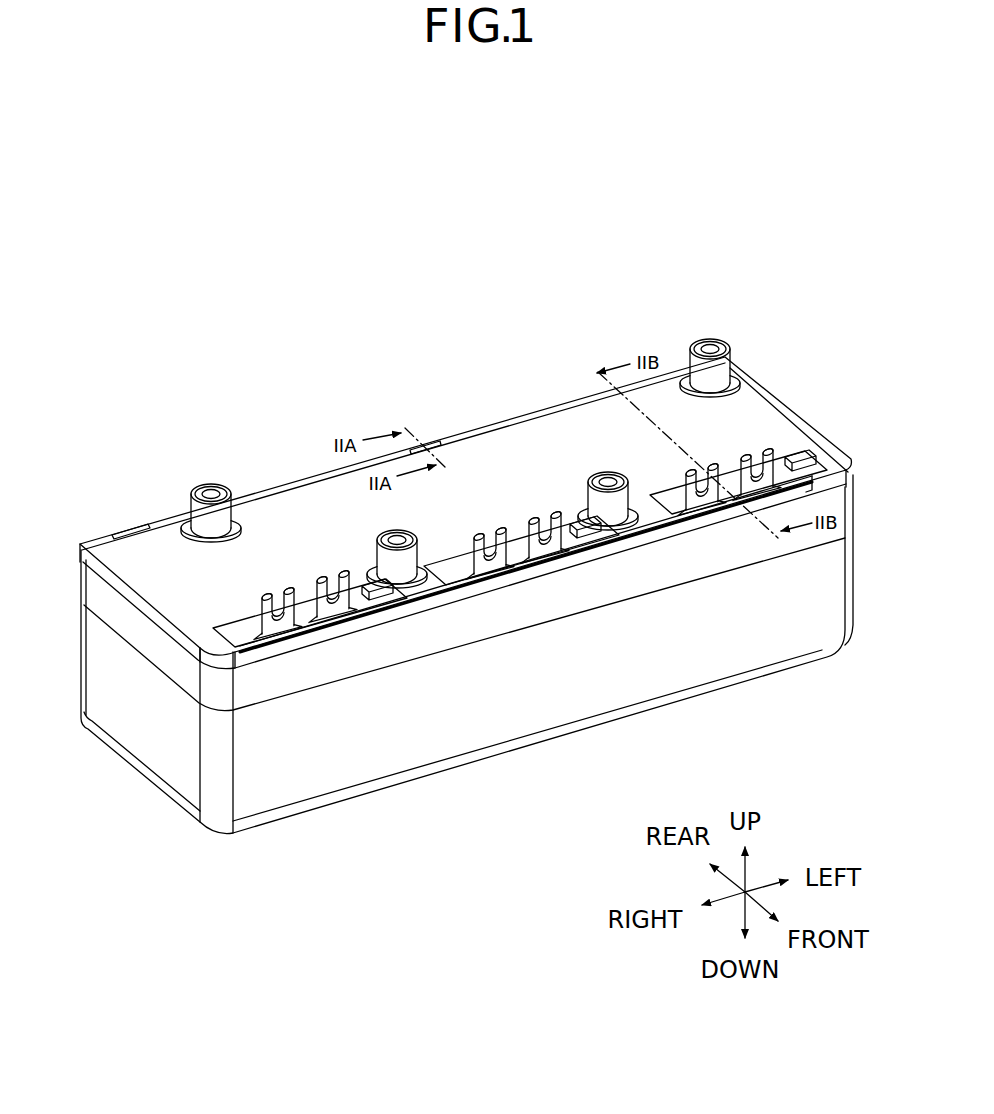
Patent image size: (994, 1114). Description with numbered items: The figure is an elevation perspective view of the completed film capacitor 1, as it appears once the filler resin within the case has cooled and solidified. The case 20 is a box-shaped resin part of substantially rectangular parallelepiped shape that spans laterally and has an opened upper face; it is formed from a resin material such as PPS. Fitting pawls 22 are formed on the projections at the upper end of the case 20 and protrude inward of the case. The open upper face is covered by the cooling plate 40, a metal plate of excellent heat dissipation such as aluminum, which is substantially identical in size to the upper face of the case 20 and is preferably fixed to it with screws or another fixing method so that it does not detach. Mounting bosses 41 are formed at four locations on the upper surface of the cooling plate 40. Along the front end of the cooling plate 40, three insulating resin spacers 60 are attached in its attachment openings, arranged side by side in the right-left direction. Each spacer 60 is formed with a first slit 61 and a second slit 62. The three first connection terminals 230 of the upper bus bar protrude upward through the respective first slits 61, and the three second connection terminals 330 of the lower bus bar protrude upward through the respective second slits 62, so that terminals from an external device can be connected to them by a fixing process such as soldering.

The film capacitor 1 is at (188, 378).
The case 20 is at (665, 680).
The fitting pawl 22 is at (432, 443).
The cooling plate 40 is at (770, 420).
The mounting boss 41 is at (731, 343).
The spacer 60 is at (240, 625).
The first slit 61 is at (805, 485).
The second slit 62 is at (740, 527).
The first connection terminal 230 is at (337, 583).
The second connection terminal 330 is at (285, 595).